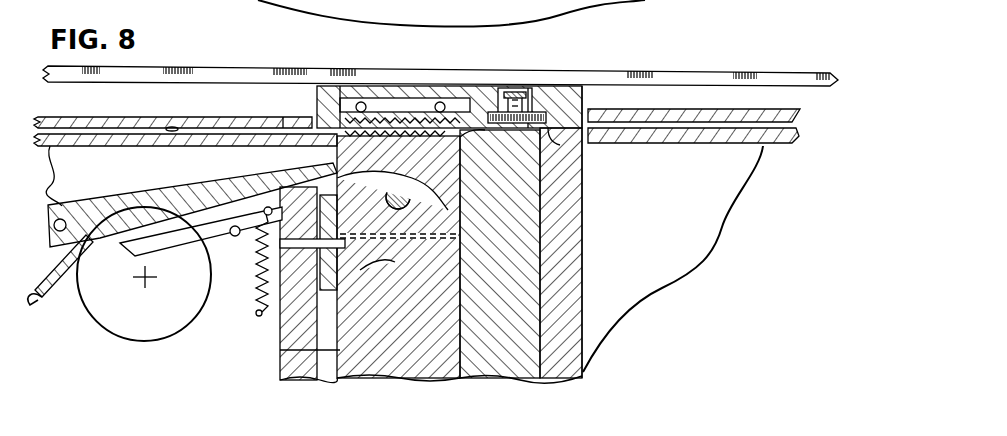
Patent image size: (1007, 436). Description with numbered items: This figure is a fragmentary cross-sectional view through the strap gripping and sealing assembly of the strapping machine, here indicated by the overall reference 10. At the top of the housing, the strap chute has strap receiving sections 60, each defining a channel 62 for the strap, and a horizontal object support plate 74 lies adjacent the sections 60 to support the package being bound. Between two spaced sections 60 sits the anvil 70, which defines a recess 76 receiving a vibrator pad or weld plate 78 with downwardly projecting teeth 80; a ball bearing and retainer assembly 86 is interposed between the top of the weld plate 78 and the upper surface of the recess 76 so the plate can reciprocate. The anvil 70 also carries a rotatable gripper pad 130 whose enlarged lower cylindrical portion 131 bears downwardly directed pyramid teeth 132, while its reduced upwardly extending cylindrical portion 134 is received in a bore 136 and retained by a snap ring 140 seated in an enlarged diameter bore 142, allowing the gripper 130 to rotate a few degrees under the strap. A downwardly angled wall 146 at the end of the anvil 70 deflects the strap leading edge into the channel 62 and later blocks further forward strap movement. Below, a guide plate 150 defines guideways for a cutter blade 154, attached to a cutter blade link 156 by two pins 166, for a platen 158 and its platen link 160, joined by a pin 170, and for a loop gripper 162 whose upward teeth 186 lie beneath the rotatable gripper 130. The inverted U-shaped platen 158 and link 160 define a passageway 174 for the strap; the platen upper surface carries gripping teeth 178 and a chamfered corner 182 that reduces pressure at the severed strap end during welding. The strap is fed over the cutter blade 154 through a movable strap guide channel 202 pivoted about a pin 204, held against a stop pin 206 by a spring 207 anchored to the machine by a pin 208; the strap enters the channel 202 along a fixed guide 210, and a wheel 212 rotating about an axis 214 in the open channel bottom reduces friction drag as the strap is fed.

The apparatus 10 is at (422, 0).
The object support plate 74 is at (811, 72).
The strap receiving section 60 is at (226, 117).
The channel 62 is at (180, 126).
The chamfered corner 182 is at (283, 117).
The anvil 70 is at (363, 84).
The recess 76 is at (324, 98).
The weld plate 78 is at (390, 120).
The teeth 80 is at (406, 125).
The ball bearing and retainer assembly 86 is at (441, 110).
The bore 136 is at (486, 120).
The snap ring 140 is at (508, 92).
The upwardly extending cylindrical portion 134 is at (522, 93).
The enlarged diameter bore 142 is at (520, 100).
The rotatable gripper pad 130 is at (532, 104).
The teeth 132 is at (556, 175).
The downwardly angled wall 146 is at (552, 152).
The guide plate 150 is at (590, 229).
The cutter blade 154 is at (338, 300).
The passageway 174 is at (466, 212).
The enlarged lower cylindrical portion 131 is at (463, 192).
The loop gripper 162 is at (532, 310).
The teeth 186 is at (583, 208).
The teeth 178 is at (392, 197).
The pin 170 is at (426, 240).
The pins 166 is at (350, 268).
The cutter blade link 156 is at (290, 330).
The platen link 160 is at (305, 351).
The platen 158 is at (318, 162).
The pin 206 is at (229, 231).
The spring 207 is at (262, 248).
The pin 208 is at (257, 312).
The strap guide channel 202 is at (147, 192).
The pin 204 is at (56, 178).
The fixed guide 210 is at (213, 191).
The wheel 212 is at (101, 322).
The axis 214 is at (146, 283).